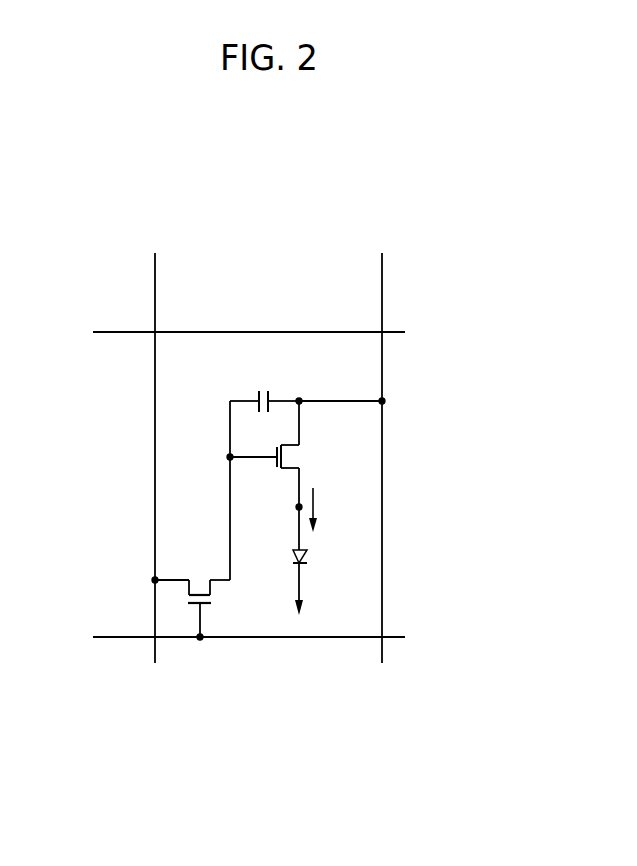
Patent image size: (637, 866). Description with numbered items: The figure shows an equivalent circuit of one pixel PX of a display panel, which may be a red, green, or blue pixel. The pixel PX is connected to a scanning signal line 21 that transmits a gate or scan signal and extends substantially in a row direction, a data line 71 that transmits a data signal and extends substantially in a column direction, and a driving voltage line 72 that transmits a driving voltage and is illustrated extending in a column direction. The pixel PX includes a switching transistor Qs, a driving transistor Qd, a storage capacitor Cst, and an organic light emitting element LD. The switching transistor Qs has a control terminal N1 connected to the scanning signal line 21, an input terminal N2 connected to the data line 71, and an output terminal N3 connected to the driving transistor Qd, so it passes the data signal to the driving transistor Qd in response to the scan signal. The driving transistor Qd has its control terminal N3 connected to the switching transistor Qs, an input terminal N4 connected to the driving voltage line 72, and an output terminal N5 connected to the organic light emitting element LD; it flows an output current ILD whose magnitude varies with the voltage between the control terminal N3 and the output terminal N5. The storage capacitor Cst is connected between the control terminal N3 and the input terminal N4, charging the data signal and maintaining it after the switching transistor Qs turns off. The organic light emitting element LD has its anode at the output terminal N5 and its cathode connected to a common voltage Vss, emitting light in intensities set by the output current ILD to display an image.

The data line 71 is at (156, 442).
The driving voltage line 72 is at (383, 442).
The scanning signal line 21 is at (233, 635).
The pixel PX is at (195, 365).
The storage capacitor Cst is at (264, 385).
The switching transistor Qs is at (192, 591).
The driving transistor Qd is at (307, 454).
The organic light emitting element LD is at (316, 556).
The common voltage Vss is at (320, 613).
The output current ILD is at (329, 510).
The control terminal N1 is at (200, 654).
The input terminal N2 is at (140, 579).
The output terminal N3 is at (235, 458).
The input terminal N4 is at (335, 383).
The output terminal N5 is at (283, 507).